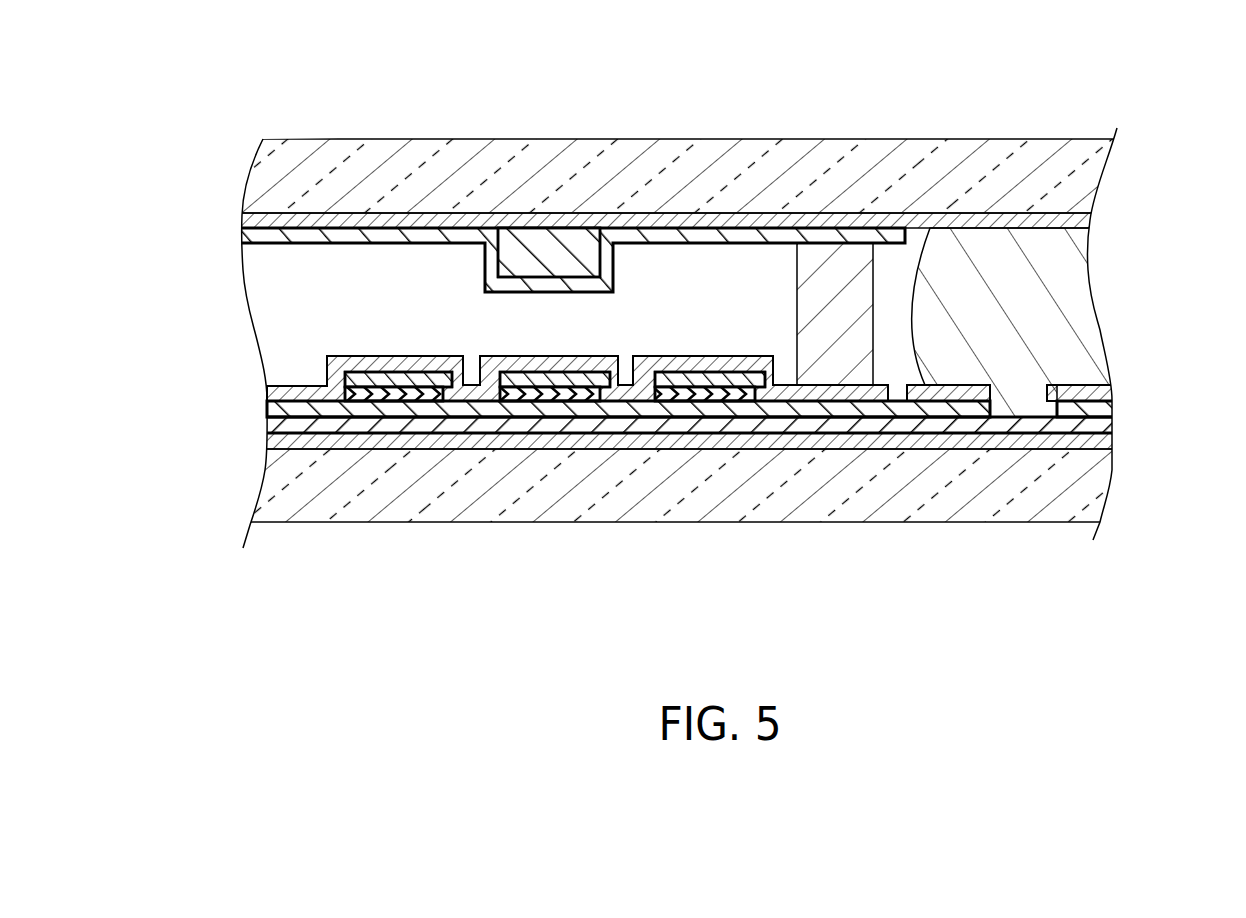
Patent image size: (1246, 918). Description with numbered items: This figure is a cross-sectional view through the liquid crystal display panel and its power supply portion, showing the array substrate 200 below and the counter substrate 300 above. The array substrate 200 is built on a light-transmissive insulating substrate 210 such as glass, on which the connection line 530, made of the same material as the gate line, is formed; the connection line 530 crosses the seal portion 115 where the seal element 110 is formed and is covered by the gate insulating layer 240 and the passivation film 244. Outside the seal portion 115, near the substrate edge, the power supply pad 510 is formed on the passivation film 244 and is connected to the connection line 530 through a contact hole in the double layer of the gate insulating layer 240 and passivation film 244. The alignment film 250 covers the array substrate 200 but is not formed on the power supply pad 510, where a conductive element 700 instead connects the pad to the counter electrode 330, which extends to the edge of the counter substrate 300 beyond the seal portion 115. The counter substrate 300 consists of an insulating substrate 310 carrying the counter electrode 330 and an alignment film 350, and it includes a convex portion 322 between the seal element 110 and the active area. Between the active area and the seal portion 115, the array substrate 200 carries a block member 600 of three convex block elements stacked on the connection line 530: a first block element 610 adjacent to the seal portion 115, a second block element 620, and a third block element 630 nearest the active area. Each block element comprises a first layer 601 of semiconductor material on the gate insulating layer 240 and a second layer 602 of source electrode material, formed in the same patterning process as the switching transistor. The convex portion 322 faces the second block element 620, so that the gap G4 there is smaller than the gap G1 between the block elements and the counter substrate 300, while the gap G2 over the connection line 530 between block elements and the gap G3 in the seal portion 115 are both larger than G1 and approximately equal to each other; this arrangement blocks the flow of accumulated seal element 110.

The counter substrate 300 is at (1125, 124).
The array substrate 200 is at (1105, 528).
The insulating substrate 310 is at (255, 180).
The counter electrode 330 is at (247, 221).
The alignment film 350 is at (245, 238).
The convex portion 322 is at (526, 240).
The seal element 110 is at (848, 256).
The conductive element 700 is at (1090, 321).
The alignment film 250 is at (268, 392).
The passivation film 244 is at (268, 410).
The gate insulating layer 240 is at (268, 424).
The connection line 530 is at (268, 441).
The insulating substrate 210 is at (1108, 490).
The power supply pad 510 is at (1105, 392).
The first layer 601 is at (390, 397).
The second layer 602 is at (402, 392).
The third block element 630 is at (368, 402).
The second block element 620 is at (540, 402).
The first block element 610 is at (685, 402).
The block member 600 is at (373, 588).
The seal portion 115 is at (893, 543).
The gap G1 is at (728, 355).
The gap G2 is at (626, 383).
The gap G3 is at (783, 384).
The gap G4 is at (592, 354).